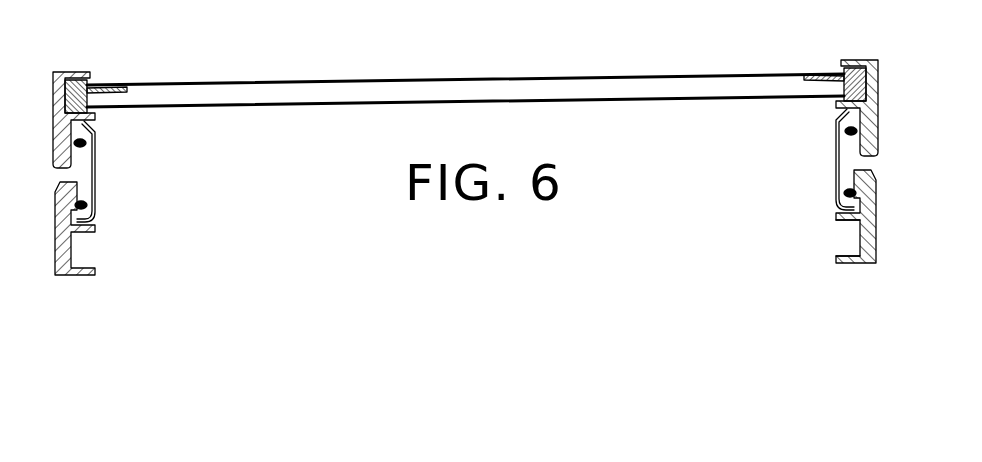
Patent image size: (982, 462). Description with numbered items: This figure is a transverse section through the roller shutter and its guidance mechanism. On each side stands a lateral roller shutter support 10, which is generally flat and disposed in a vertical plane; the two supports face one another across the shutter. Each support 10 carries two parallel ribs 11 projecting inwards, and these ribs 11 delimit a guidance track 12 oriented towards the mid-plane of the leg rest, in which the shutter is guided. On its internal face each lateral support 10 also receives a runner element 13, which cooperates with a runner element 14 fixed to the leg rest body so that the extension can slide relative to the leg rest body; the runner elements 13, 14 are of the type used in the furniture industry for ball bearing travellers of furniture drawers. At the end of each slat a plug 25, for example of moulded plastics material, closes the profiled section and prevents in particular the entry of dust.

The lateral roller shutter support 10 is at (44, 276).
The parallel ribs 11 is at (95, 233).
The guidance track 12 is at (866, 246).
The runner element 13 is at (93, 167).
The runner element 14 is at (99, 200).
The plugs 25 is at (80, 72).